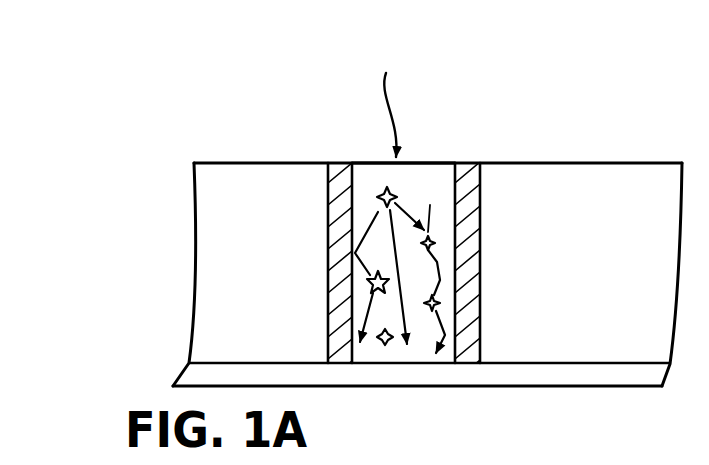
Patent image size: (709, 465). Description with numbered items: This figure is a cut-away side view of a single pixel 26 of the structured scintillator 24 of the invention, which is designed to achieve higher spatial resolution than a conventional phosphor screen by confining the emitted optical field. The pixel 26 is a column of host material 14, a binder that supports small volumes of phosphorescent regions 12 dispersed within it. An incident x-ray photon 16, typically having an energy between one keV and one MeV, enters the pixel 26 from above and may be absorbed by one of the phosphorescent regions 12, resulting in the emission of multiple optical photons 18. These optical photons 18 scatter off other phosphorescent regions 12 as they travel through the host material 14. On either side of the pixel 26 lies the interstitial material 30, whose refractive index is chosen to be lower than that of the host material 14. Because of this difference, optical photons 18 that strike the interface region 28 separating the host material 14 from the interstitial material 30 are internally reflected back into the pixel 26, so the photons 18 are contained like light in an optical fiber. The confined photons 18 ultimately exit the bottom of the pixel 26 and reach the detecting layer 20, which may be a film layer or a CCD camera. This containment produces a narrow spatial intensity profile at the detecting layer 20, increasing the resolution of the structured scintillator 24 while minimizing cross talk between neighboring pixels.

The phosphorescent regions 12 is at (399, 193).
The host material 14 is at (365, 198).
The incident x-ray photons 16 is at (380, 112).
The optical photons 18 is at (443, 291).
The detecting layer 20 is at (617, 376).
The structured scintillator 24 is at (575, 116).
The pixel 26 is at (440, 157).
The interface region 28 is at (462, 258).
The interstitial material 30 is at (472, 210).